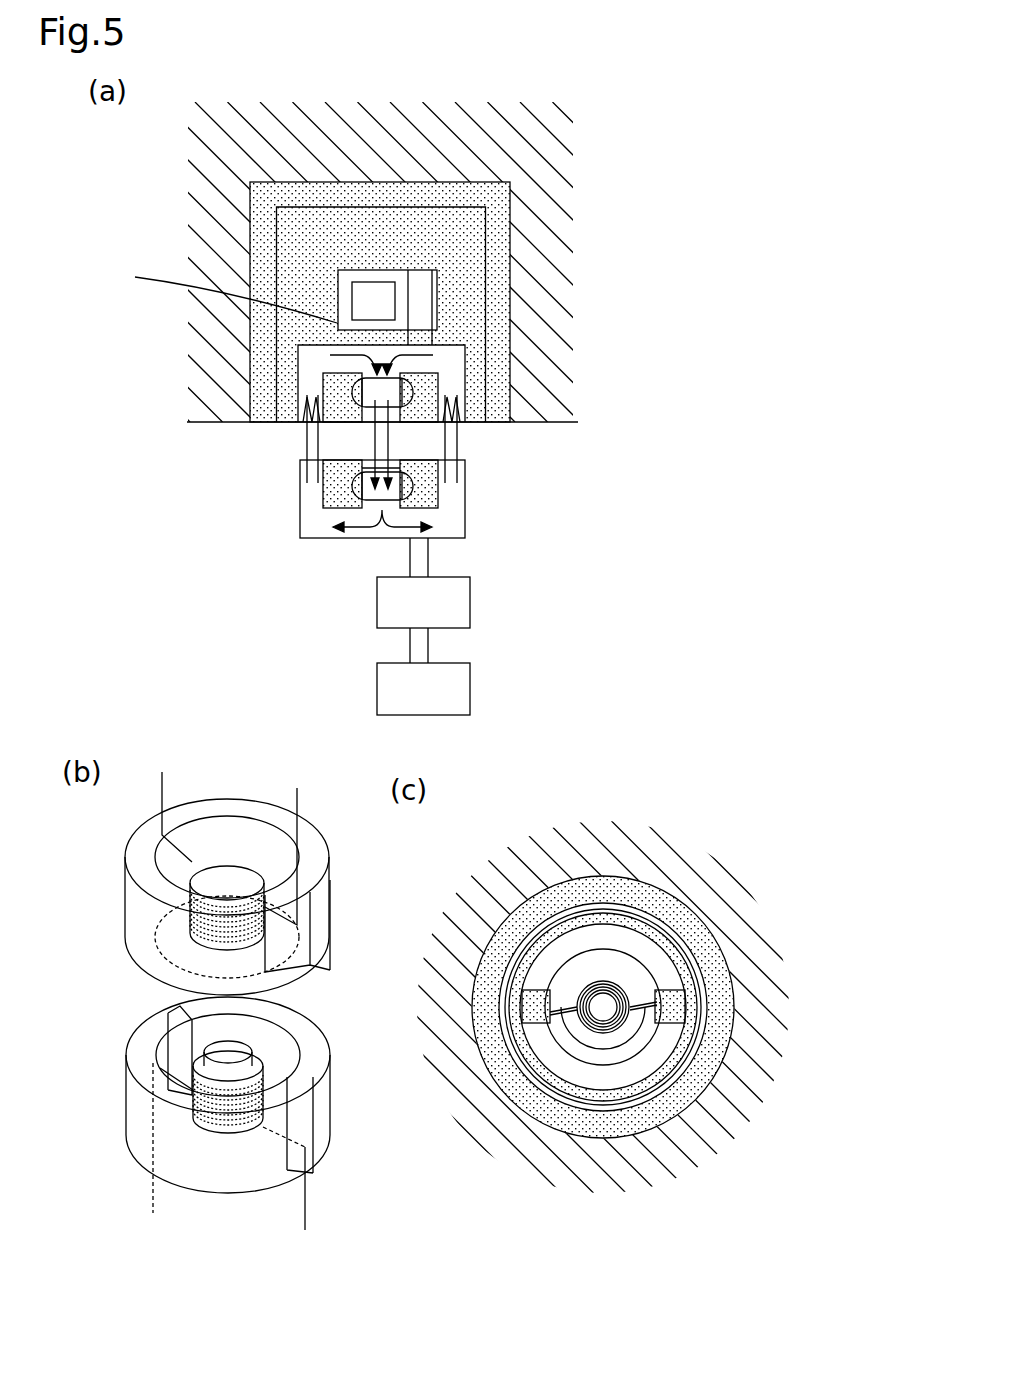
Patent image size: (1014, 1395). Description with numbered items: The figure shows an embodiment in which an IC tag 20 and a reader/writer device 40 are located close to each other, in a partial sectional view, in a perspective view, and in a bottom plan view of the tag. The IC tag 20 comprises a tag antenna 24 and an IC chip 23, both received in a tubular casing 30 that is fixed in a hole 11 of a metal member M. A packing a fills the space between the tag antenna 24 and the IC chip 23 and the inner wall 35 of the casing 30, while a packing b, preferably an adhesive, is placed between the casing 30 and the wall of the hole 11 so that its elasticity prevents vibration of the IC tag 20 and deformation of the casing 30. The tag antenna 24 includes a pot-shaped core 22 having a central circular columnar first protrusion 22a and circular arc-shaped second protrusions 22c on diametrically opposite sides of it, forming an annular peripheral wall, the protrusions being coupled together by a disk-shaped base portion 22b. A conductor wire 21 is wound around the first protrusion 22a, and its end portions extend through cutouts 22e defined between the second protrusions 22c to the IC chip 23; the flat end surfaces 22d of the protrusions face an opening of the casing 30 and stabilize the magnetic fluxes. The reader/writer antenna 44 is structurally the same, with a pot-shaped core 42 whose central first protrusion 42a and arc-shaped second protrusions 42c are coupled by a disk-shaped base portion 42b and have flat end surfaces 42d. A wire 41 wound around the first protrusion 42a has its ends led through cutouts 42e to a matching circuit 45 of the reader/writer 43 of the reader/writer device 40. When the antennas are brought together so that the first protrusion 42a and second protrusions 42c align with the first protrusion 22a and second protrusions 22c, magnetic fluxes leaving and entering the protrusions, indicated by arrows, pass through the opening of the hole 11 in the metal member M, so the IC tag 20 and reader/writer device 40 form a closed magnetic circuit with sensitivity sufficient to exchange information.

The hole 11 is at (277, 212).
The IC tag 20 is at (433, 258).
The conductor wire 21 is at (425, 272).
The pot-shaped core 22 is at (298, 360).
The first protrusion 22a is at (375, 410).
The base portion 22b is at (466, 348).
The second protrusions 22c is at (307, 448).
The end surfaces 22d is at (552, 1008).
The cutouts 22e is at (170, 833).
The IC chip 23 is at (400, 277).
The tag antenna 24 is at (468, 370).
The tubular casing 30 is at (633, 978).
The inner wall 35 is at (250, 419).
The reader/writer device 40 is at (530, 590).
The wire 41 is at (408, 557).
The pot-shaped core 42 is at (325, 532).
The first protrusion 42a is at (362, 480).
The base portion 42b is at (466, 513).
The second protrusions 42c is at (315, 465).
The end surfaces 42d is at (147, 1043).
The cutouts 42e is at (152, 1072).
The reader/writer 43 is at (443, 690).
The reader/writer antenna 44 is at (485, 516).
The matching circuit 45 is at (440, 610).
The packing a is at (393, 218).
The packing b is at (510, 290).
The metal member M is at (213, 375).